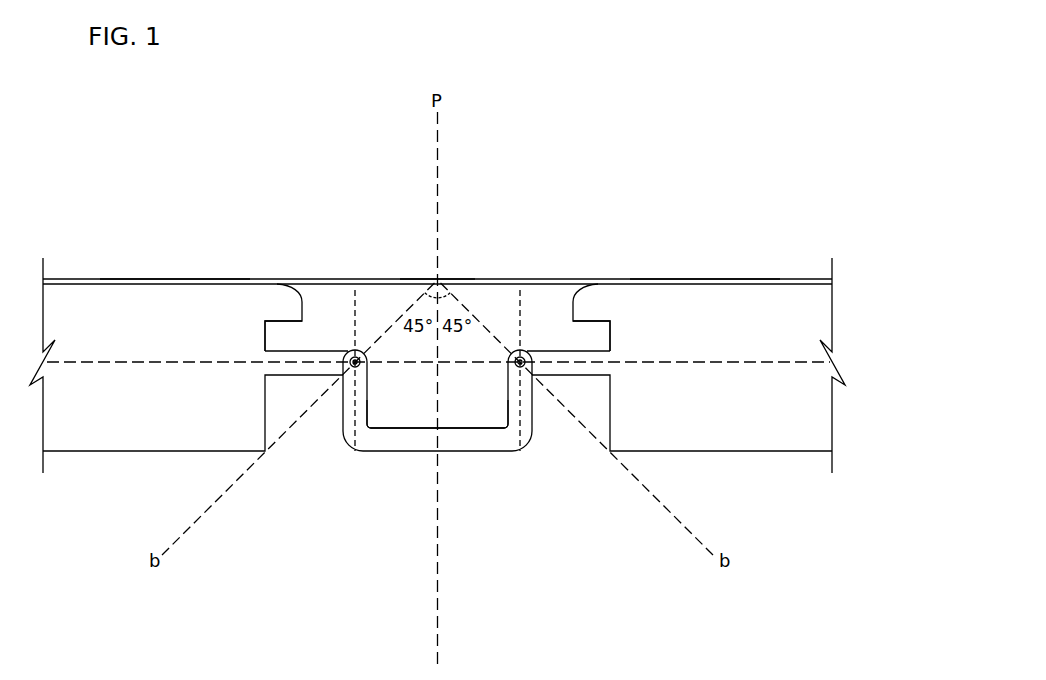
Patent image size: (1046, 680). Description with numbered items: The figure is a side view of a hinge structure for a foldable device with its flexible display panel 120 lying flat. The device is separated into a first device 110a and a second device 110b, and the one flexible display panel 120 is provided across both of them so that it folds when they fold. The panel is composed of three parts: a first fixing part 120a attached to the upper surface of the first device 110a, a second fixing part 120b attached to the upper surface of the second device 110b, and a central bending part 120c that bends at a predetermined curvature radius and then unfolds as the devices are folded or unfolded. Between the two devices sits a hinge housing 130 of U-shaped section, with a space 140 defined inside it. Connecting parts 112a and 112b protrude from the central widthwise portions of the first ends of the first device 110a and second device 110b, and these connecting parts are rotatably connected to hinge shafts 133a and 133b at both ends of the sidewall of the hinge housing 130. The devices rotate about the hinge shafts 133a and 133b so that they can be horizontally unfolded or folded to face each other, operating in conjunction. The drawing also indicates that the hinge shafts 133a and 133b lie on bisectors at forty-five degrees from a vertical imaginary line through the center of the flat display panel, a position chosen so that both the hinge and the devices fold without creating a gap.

The flexible display panel 120 is at (97, 268).
The first fixing part 120a is at (173, 278).
The second fixing part 120b is at (703, 278).
The bending part 120c is at (415, 279).
The first device 110a is at (120, 438).
The second device 110b is at (755, 438).
The connecting part 112a is at (322, 357).
The connecting part 112b is at (553, 357).
The hinge housing 130 is at (400, 452).
The hinge shaft 133a is at (360, 356).
The hinge shaft 133b is at (515, 356).
The space 140 is at (475, 400).